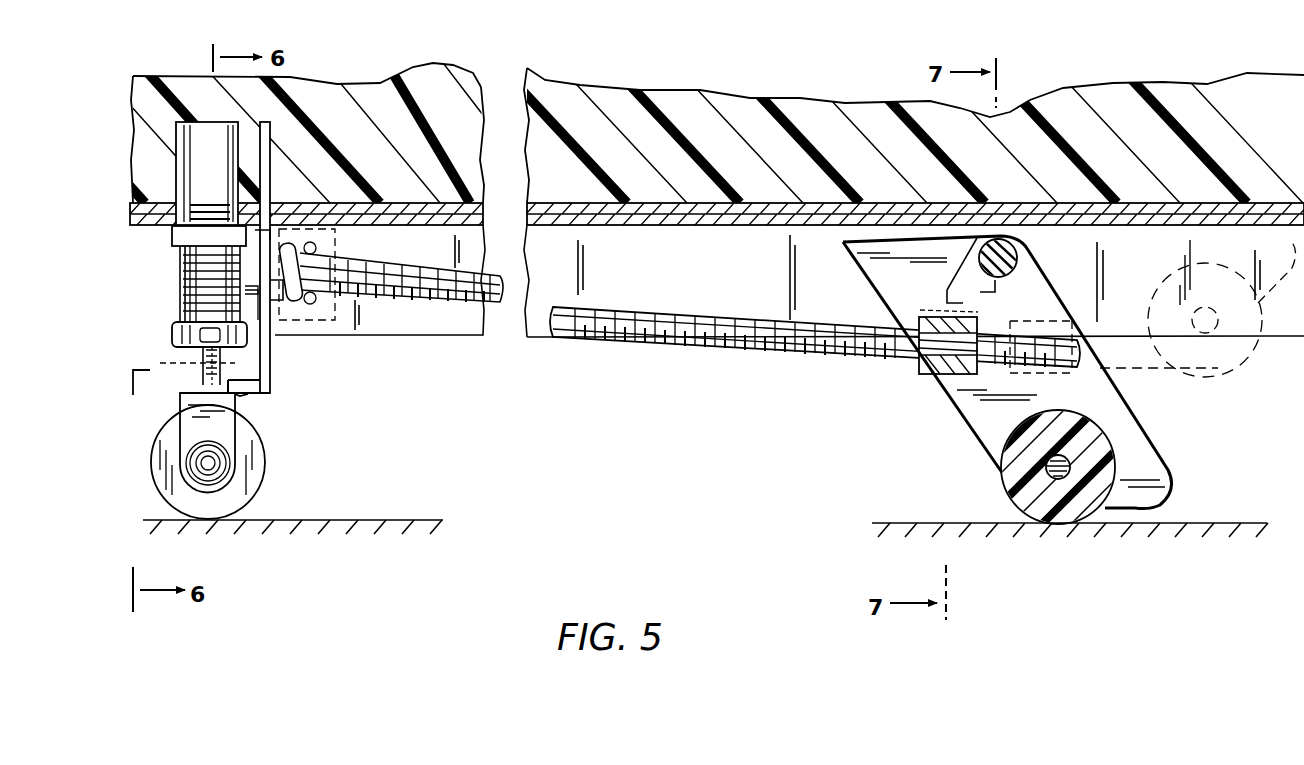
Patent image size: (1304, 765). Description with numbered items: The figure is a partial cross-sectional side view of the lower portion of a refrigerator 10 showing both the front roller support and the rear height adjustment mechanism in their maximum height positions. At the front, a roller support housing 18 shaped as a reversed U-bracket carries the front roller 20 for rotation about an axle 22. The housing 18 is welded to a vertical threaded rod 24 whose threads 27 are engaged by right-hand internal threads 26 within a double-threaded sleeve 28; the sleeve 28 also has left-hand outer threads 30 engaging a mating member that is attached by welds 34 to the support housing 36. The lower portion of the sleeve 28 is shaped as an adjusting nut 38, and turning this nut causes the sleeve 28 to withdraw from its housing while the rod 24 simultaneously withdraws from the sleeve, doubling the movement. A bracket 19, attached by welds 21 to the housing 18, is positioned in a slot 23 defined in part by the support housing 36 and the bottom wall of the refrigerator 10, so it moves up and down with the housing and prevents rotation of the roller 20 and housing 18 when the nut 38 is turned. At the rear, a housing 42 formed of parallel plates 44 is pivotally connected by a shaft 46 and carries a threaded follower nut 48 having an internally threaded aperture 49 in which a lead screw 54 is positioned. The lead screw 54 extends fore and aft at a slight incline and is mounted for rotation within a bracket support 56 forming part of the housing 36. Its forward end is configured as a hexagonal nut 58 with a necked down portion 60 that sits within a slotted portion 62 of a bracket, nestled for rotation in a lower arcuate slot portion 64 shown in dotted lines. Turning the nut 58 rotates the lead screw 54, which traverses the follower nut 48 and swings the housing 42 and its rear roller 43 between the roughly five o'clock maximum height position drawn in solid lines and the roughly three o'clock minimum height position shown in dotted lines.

The refrigerator 10 is at (1182, 77).
The roller support housing 18 is at (223, 431).
The bracket 19 is at (270, 392).
The front roller 20 is at (260, 495).
The welds 21 is at (240, 397).
The axle 22 is at (214, 463).
The slot 23 is at (268, 200).
The vertical threaded rod 24 is at (206, 354).
The internal threads 26 is at (214, 373).
The threads 27 is at (224, 362).
The threaded sleeve 28 is at (195, 301).
The outer threads 30 is at (250, 305).
The welds 34 is at (172, 232).
The support housing 36 is at (656, 283).
The adjusting nut 38 is at (173, 331).
The housing 42 is at (1147, 374).
The rear roller 43 is at (1003, 469).
The parallel plates 44 is at (985, 430).
The shaft 46 is at (1015, 253).
The threaded follower nut 48 is at (923, 366).
The internally threaded aperture 49 is at (937, 322).
The lead screw 54 is at (656, 332).
The bracket support 56 is at (327, 314).
The nut 58 is at (212, 273).
The necked down portion 60 is at (312, 228).
The slotted portion 62 is at (268, 237).
The lower arcuate portion of the slot 64 is at (275, 297).